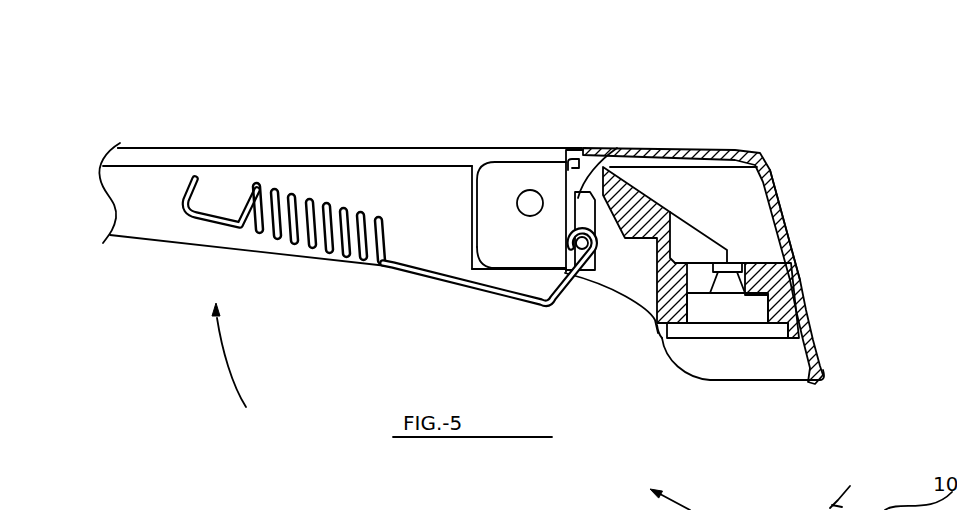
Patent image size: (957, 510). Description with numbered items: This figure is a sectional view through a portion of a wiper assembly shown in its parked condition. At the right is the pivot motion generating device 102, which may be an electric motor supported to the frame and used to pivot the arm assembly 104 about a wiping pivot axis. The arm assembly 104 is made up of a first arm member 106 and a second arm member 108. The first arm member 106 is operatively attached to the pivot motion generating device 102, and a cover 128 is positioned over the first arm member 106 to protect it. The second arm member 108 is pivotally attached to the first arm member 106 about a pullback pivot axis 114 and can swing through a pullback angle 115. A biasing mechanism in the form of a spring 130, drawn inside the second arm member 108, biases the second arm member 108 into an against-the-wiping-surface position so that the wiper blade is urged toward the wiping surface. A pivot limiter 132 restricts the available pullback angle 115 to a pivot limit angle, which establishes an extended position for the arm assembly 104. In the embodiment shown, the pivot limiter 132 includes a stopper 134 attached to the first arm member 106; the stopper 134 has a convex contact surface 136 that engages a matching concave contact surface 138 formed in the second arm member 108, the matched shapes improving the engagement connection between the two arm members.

The pivot motion generating device 102 is at (733, 363).
The arm assembly 104 is at (390, 134).
The first arm member 106 is at (788, 298).
The second arm member 108 is at (304, 158).
The pullback pivot axis 114 is at (525, 194).
The pullback angle 115 is at (227, 360).
The cover 128 is at (785, 207).
The spring 130 is at (401, 270).
The pivot limiter 132 is at (746, 151).
The stopper 134 is at (588, 214).
The contact surface 136 is at (617, 148).
The contact surface 138 is at (578, 166).